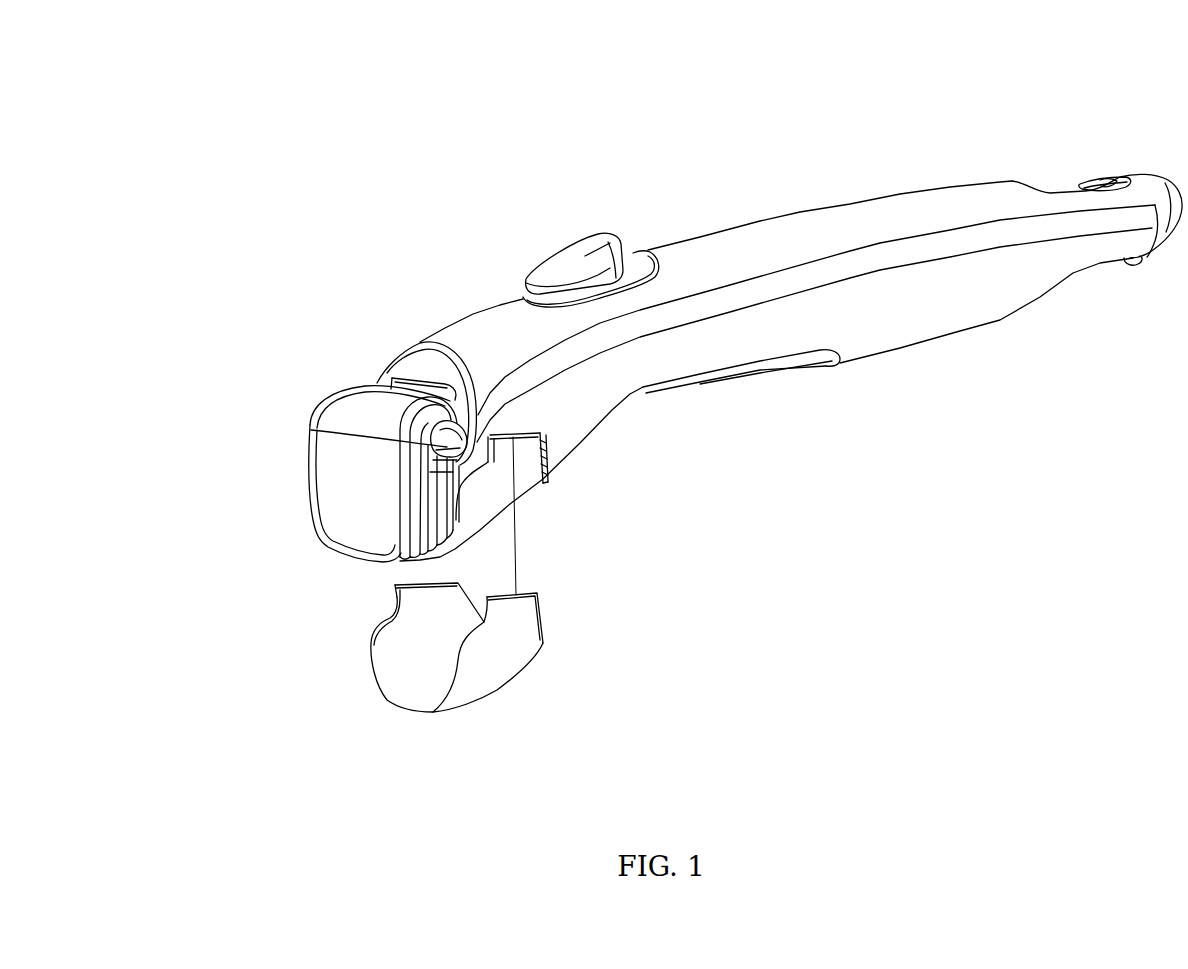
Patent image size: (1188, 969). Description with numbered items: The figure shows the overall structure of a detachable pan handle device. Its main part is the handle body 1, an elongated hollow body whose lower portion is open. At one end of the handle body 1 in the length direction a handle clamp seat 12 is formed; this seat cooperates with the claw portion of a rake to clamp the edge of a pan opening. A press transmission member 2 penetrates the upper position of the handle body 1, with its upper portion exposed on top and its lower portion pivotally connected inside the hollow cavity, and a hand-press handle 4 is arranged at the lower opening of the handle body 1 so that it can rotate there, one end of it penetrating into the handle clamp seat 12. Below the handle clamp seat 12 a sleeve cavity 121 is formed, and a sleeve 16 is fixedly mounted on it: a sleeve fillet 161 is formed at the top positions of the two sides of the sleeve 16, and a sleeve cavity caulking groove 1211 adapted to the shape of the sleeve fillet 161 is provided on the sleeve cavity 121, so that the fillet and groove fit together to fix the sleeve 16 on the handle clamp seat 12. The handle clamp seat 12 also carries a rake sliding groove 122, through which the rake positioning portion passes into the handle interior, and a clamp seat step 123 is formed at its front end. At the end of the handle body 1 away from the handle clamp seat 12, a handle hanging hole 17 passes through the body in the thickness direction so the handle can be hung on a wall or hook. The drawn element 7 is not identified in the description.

The handle body 1 is at (825, 313).
The press transmission member 2 is at (620, 280).
The hand-press handle 4 is at (720, 381).
The end cap 7 is at (365, 498).
The handle clamp seat 12 is at (440, 538).
The sleeve cavity 121 is at (505, 480).
The sleeve cavity caulking groove 1211 is at (543, 450).
The rake sliding groove 122 is at (425, 383).
The clamp seat step 123 is at (450, 452).
The sleeve 16 is at (417, 665).
The sleeve fillet 161 is at (487, 603).
The handle hanging hole 17 is at (1117, 177).